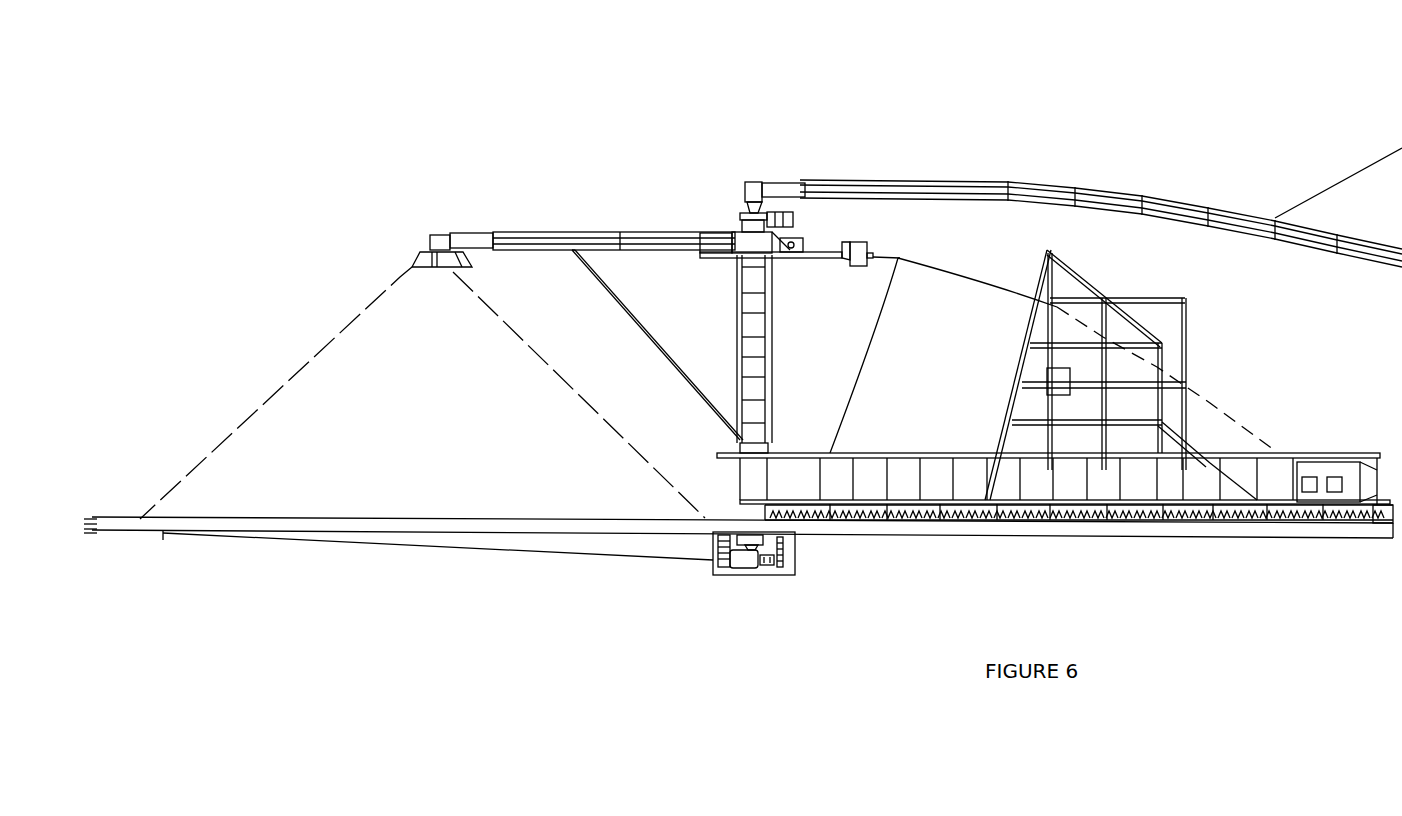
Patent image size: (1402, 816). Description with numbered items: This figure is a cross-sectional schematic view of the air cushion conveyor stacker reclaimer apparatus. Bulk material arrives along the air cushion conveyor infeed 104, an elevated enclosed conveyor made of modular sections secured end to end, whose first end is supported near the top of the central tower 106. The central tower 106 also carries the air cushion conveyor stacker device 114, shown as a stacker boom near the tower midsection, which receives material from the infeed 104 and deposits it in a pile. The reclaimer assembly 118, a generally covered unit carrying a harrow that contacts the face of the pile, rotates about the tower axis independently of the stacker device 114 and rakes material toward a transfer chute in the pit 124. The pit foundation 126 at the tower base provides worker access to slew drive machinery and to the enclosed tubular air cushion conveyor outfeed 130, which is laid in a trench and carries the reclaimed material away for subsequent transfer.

The air cushion conveyor infeed 104 is at (950, 178).
The air cushion conveyor stacker device 114 is at (533, 230).
The central tower 106 is at (737, 332).
The reclaimer assembly 118 is at (1057, 520).
The pit 124 is at (793, 550).
The pit foundation 126 is at (740, 577).
The air cushion conveyor outfeed 130 is at (738, 576).